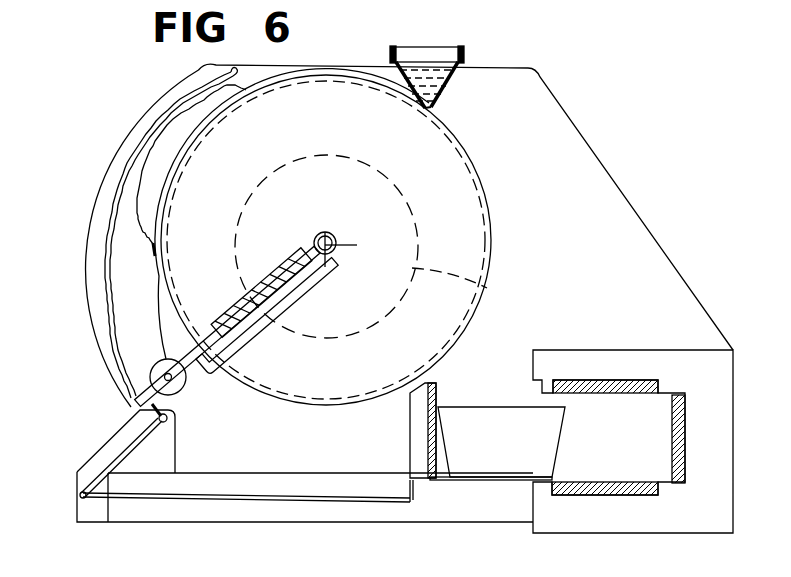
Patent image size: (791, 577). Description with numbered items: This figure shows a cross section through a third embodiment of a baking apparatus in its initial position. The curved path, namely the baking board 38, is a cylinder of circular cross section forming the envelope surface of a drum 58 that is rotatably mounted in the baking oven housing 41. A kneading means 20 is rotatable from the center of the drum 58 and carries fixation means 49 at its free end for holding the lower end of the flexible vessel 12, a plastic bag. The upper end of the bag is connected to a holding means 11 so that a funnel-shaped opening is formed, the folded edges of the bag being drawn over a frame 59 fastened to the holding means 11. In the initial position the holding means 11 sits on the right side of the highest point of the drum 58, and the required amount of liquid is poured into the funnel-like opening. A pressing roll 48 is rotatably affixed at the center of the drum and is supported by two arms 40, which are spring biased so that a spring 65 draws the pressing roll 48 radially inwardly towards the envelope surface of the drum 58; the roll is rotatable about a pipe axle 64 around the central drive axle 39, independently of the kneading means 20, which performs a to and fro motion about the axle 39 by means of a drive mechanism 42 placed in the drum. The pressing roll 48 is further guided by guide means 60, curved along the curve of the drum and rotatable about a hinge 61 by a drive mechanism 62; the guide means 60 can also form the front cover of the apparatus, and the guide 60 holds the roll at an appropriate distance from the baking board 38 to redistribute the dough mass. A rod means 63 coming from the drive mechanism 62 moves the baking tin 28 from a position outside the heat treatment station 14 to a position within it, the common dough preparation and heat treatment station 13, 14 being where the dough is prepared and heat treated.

The holding means 11 is at (468, 50).
The flexible vessel 12 is at (147, 190).
The dough preparation and heat treatment station 13 is at (148, 335).
The heat treatment station 14 is at (625, 452).
The kneading means 20 is at (160, 294).
The baking tin 28 is at (503, 452).
The baking board 38 is at (489, 220).
The central drive axle 39 is at (333, 240).
The arms 40 is at (222, 315).
The baking oven housing 41 is at (544, 108).
The drive mechanism 42 is at (488, 284).
The pressing roll 48 is at (156, 368).
The fixation means 49 is at (150, 250).
The drum 58 is at (455, 188).
The frame 59 is at (413, 50).
The guide means 60 is at (152, 142).
The hinge 61 is at (158, 418).
The drive mechanism 62 is at (158, 456).
The rod means 63 is at (140, 497).
The pipe axle 64 is at (323, 233).
The spring 65 is at (265, 295).